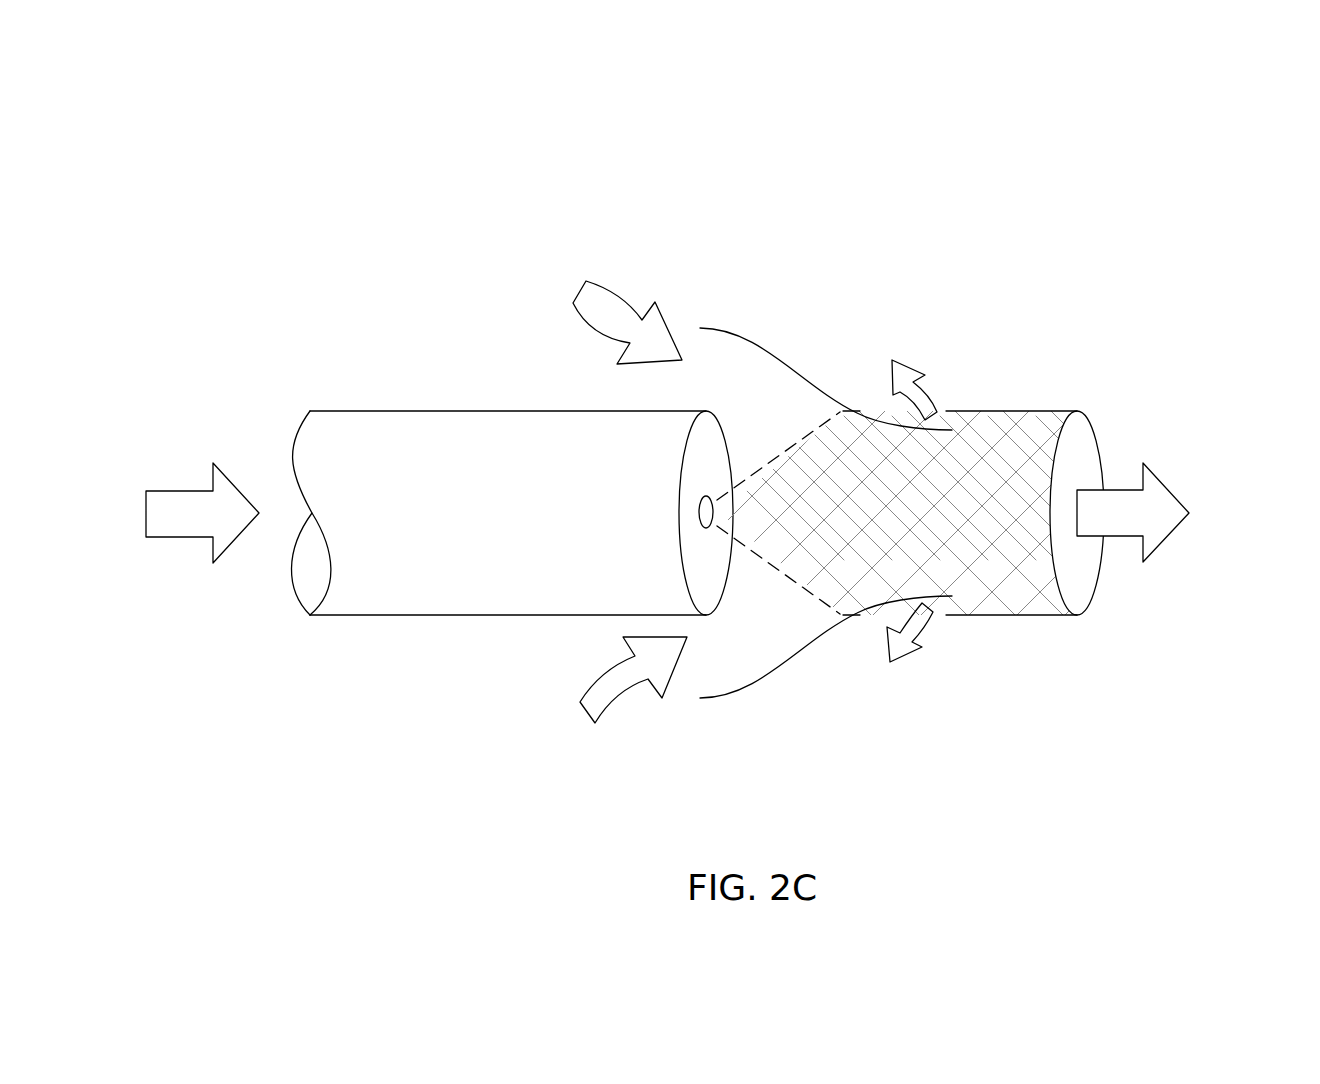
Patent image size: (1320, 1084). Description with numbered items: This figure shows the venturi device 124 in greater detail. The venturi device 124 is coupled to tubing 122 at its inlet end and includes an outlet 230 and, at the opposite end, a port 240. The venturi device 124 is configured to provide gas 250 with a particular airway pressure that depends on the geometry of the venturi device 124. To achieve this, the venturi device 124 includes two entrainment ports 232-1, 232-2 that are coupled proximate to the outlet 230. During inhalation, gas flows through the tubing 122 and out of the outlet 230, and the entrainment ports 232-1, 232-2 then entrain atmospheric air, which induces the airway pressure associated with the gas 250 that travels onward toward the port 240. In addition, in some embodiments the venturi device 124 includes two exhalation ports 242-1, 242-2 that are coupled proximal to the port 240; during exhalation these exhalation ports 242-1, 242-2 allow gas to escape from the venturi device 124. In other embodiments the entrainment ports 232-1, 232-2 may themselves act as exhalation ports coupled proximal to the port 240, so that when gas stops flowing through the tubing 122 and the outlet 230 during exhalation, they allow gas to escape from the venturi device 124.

The tubing 122 is at (385, 440).
The venturi device 124 is at (1171, 249).
The outlet 230 is at (700, 508).
The entrainment port 232-1 is at (737, 367).
The entrainment port 232-2 is at (725, 660).
The port 240 is at (1085, 465).
The exhalation port 242-1 is at (948, 418).
The exhalation port 242-2 is at (943, 603).
The gas 250 is at (1008, 518).